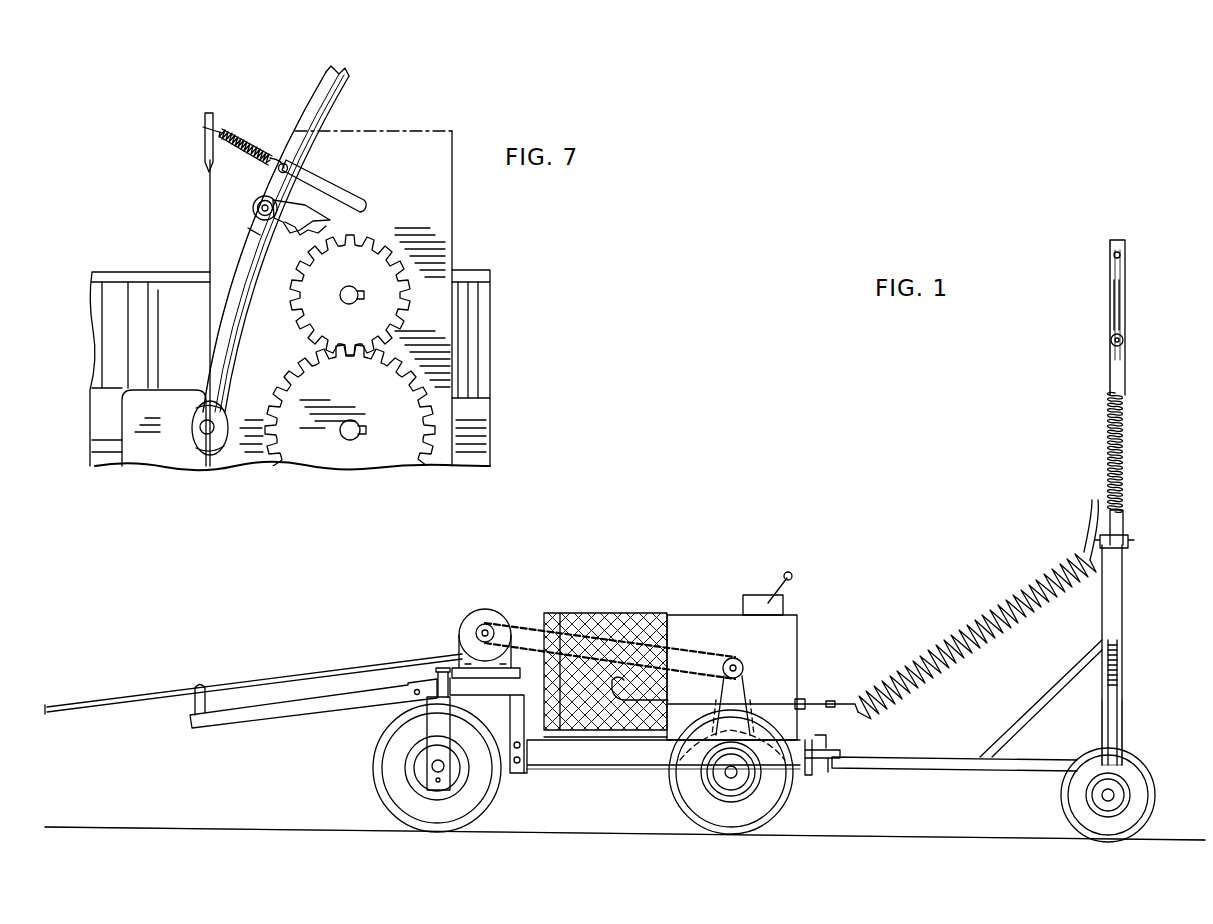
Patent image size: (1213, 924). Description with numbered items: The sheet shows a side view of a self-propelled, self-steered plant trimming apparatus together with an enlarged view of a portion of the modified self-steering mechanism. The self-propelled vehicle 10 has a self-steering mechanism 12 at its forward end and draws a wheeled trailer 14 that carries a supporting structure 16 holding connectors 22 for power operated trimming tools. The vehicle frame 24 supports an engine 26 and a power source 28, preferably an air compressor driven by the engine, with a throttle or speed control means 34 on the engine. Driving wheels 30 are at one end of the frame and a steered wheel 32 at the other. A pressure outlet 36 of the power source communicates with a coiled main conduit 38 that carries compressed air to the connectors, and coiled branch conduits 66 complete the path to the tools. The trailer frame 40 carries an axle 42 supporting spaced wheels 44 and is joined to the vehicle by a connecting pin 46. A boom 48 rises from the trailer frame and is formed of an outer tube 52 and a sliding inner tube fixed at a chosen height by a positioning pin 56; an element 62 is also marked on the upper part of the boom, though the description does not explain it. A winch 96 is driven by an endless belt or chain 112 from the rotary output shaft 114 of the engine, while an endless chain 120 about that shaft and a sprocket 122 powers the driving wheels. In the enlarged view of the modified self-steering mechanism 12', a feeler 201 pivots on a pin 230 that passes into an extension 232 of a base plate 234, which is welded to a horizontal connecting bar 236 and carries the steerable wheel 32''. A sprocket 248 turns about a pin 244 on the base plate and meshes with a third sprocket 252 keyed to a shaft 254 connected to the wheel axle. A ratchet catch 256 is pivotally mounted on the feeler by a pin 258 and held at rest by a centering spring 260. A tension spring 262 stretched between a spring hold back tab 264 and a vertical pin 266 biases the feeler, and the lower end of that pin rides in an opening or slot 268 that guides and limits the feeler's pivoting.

In FIG. 1, the self-propelled vehicle 10 is at (808, 580).
In FIG. 7, the self-steering mechanism 12 is at (208, 242).
In FIG. 1, the self-steering mechanism 12 is at (253, 665).
In FIG. 1, the wheeled trailer 14 is at (1140, 742).
In FIG. 1, the supporting structure 16 is at (1132, 380).
In FIG. 1, the connectors 22 is at (1095, 548).
In FIG. 1, the frame 24 is at (578, 768).
In FIG. 1, the engine 26 is at (790, 645).
In FIG. 1, the power source 28 is at (635, 612).
In FIG. 1, the driving wheels 30 is at (765, 812).
In FIG. 7, the steered wheel 32 is at (131, 341).
In FIG. 1, the steered wheel 32 is at (402, 750).
In FIG. 1, the throttle or speed control means 34 is at (757, 597).
In FIG. 1, the pressure outlet 36 is at (775, 702).
In FIG. 1, the coiled main conduit 38 is at (982, 650).
In FIG. 1, the frame 40 is at (928, 772).
In FIG. 1, the axle 42 is at (1100, 796).
In FIG. 1, the wheels 44 is at (1088, 818).
In FIG. 1, the connecting pin 46 is at (835, 757).
In FIG. 1, the boom 48 is at (1130, 580).
In FIG. 1, the outer tube 52 is at (1125, 628).
In FIG. 1, the positioning pin 56 is at (1130, 541).
In FIG. 1, the slot 62 is at (1110, 284).
In FIG. 1, the coiled branch conduits 66 is at (1105, 440).
In FIG. 1, the winch 96 is at (483, 606).
In FIG. 1, the endless belt or chain 112 is at (528, 630).
In FIG. 1, the rotary output shaft 114 is at (722, 658).
In FIG. 1, the endless chain 120 is at (678, 768).
In FIG. 1, the sprocket 122 is at (757, 772).
In FIG. 7, the self-steering mechanism 12' is at (208, 242).
In FIG. 7, the steerable wheel 32'' is at (131, 341).
In FIG. 7, the feeler 201 is at (347, 93).
In FIG. 7, the pin 230 is at (200, 434).
In FIG. 7, the extension 232 is at (130, 435).
In FIG. 7, the base plate 234 is at (420, 152).
In FIG. 7, the horizontal connecting bar 236 is at (470, 452).
In FIG. 7, the pin 244 is at (356, 293).
In FIG. 7, the sprocket 248 is at (425, 258).
In FIG. 7, the third sprocket 252 is at (412, 428).
In FIG. 7, the shaft 254 is at (352, 440).
In FIG. 7, the ratchet catch 256 is at (333, 215).
In FIG. 7, the pin 258 is at (253, 210).
In FIG. 7, the centering spring 260 is at (250, 228).
In FIG. 7, the tension spring 262 is at (250, 150).
In FIG. 7, the spring hold back tab 264 is at (205, 122).
In FIG. 7, the pin 266 is at (278, 170).
In FIG. 7, the opening or slot 268 is at (318, 180).